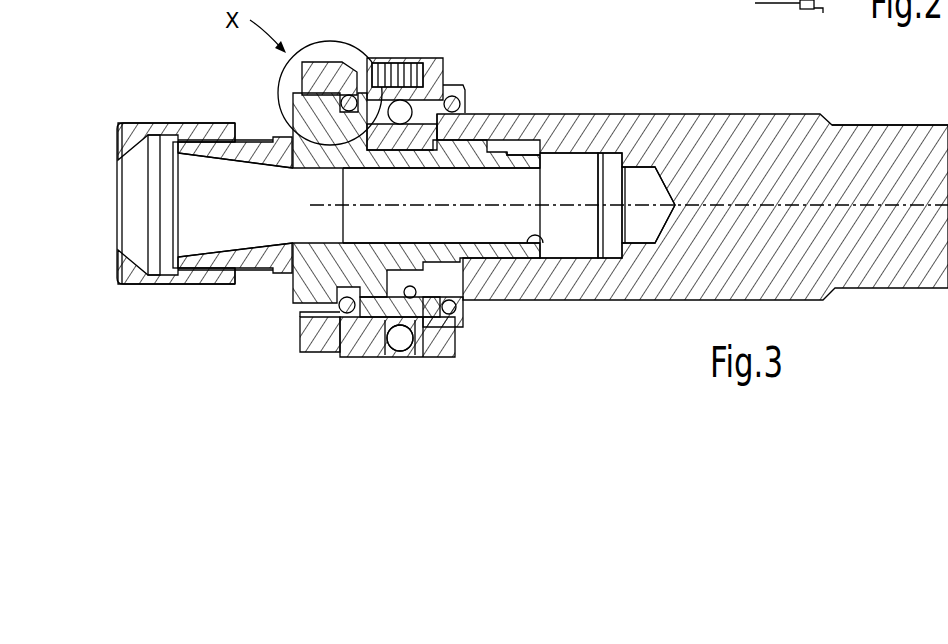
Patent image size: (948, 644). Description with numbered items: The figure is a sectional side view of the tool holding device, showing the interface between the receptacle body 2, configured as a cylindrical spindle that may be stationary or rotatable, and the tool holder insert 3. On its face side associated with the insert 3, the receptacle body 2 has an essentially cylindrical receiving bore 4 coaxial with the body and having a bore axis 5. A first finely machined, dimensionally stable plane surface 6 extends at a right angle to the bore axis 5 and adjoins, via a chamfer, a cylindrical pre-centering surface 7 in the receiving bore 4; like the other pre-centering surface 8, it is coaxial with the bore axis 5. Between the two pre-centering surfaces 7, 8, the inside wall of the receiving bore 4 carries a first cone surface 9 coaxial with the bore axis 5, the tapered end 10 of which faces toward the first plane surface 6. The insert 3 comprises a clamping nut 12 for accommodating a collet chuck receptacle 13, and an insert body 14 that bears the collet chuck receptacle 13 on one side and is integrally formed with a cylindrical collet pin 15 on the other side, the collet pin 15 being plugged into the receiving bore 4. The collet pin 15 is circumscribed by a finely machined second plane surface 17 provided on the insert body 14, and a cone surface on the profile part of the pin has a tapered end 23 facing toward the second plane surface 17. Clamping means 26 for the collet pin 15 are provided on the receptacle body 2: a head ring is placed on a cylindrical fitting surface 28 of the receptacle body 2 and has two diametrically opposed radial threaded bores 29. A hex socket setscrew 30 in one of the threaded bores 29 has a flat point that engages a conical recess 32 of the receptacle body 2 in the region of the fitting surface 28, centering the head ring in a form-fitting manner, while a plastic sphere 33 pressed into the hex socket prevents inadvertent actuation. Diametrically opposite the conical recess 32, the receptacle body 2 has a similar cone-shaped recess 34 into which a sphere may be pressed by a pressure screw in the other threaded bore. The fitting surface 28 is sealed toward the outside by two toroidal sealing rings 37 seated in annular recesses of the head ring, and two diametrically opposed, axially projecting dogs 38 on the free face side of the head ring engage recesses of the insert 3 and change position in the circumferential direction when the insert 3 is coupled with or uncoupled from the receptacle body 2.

The receptacle body 2 is at (717, 137).
The insert 3 is at (217, 104).
The receiving bore 4 is at (566, 178).
The bore axis 5 is at (873, 130).
The first plane surface 6 is at (400, 75).
The pre-centering surface 7 is at (336, 300).
The pre-centering surface 8 is at (513, 160).
The first cone surface 9 is at (433, 130).
The tapered end 10 is at (447, 327).
The clamping nut 12 is at (132, 272).
The collet chuck receptacle 13 is at (217, 247).
The insert body 14 is at (313, 267).
The collet pin 15 is at (391, 248).
The second plane surface 17 is at (302, 320).
The tapered end 23 is at (430, 168).
The clamping means 26 is at (398, 376).
The fitting surface 28 is at (362, 300).
The threaded bores 29 is at (370, 358).
The hex socket setscrew 30 is at (423, 357).
The conical recess 32 is at (440, 313).
The plastic sphere 33 is at (397, 348).
The cone-shaped recess 34 is at (424, 60).
The sealing rings 37 is at (341, 96).
The dogs 38 is at (313, 65).